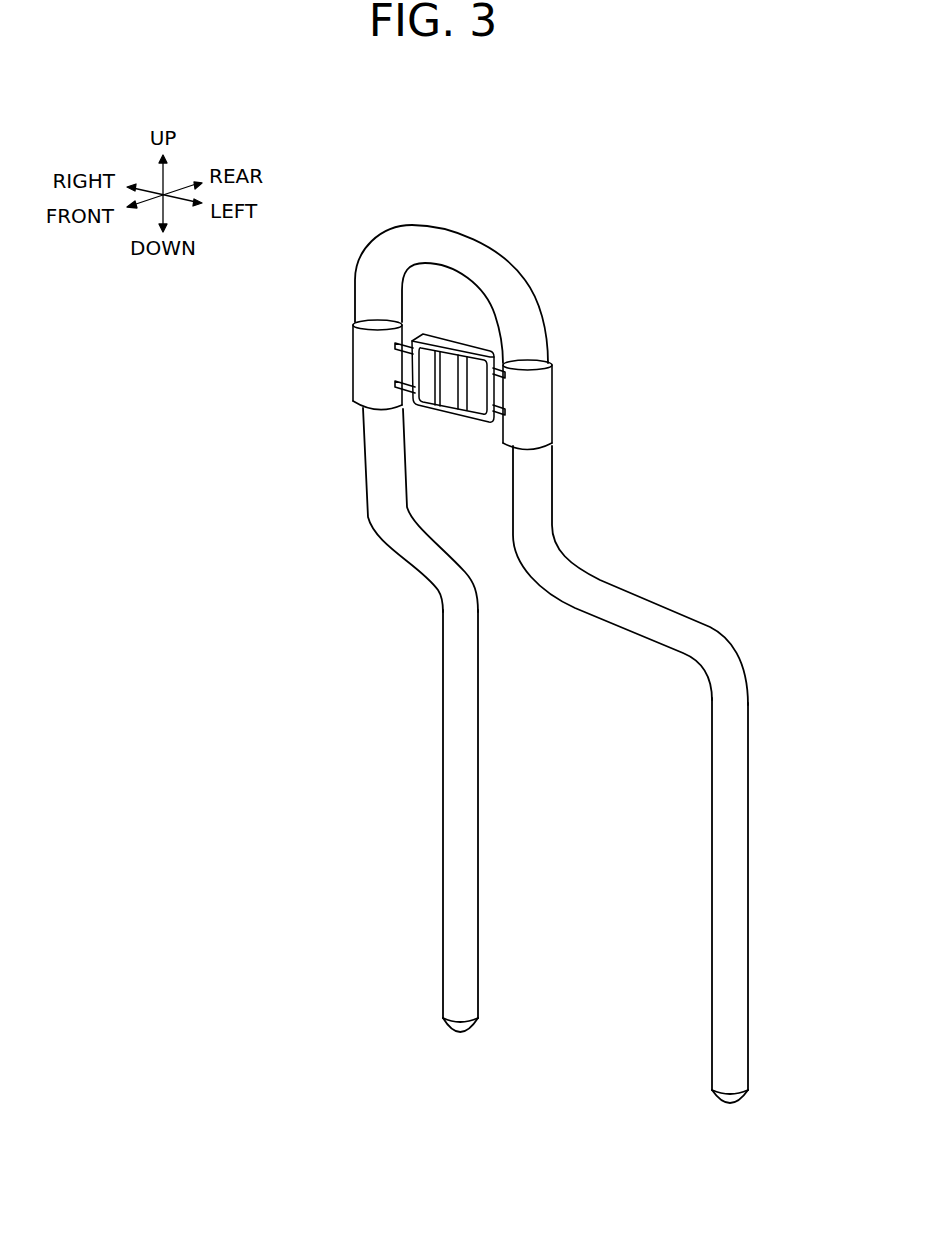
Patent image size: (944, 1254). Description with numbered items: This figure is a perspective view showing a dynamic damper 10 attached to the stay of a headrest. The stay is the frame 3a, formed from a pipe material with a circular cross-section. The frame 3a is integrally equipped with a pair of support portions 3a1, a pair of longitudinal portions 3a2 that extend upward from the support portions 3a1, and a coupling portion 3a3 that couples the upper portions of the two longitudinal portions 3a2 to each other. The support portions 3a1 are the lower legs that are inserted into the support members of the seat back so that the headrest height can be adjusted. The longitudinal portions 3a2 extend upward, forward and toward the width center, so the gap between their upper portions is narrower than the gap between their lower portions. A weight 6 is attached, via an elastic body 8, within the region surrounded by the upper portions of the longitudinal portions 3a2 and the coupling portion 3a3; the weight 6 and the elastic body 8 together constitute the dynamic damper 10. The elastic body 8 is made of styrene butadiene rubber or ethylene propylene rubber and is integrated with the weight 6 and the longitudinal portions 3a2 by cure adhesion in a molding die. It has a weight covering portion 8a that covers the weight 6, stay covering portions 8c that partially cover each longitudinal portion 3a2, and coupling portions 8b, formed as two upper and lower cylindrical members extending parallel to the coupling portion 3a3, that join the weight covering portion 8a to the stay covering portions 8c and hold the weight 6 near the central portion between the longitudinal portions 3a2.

The frame 3a is at (539, 635).
The support portions 3a1 is at (457, 822).
The longitudinal portions 3a2 is at (447, 563).
The coupling portion 3a3 is at (440, 240).
The elastic body 8 is at (409, 348).
The weight covering portion 8a is at (410, 328).
The coupling portions 8b is at (398, 388).
The stay covering portions 8c is at (520, 431).
The dynamic damper 10 is at (440, 339).
The weight 6 is at (447, 372).